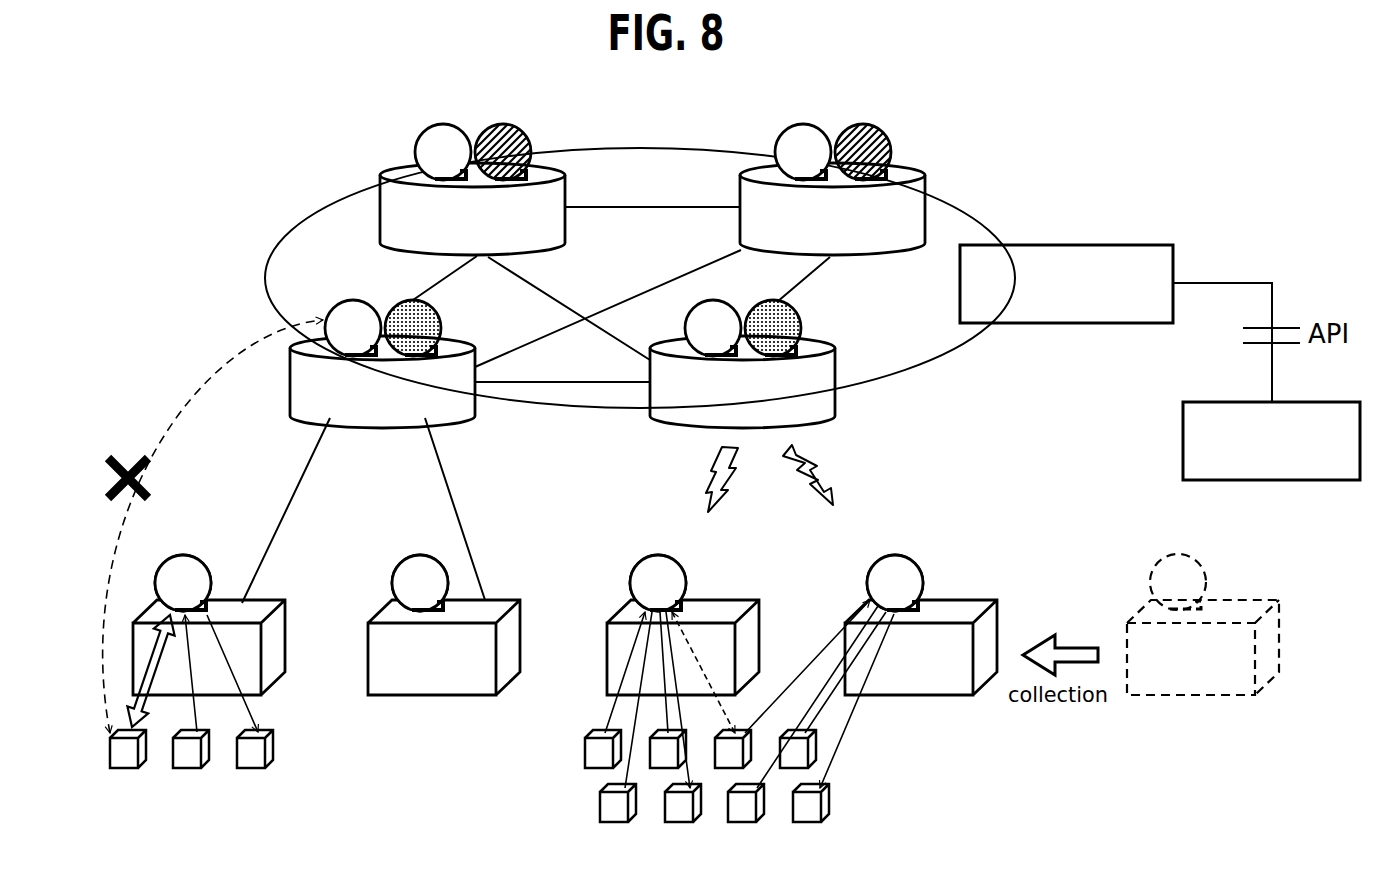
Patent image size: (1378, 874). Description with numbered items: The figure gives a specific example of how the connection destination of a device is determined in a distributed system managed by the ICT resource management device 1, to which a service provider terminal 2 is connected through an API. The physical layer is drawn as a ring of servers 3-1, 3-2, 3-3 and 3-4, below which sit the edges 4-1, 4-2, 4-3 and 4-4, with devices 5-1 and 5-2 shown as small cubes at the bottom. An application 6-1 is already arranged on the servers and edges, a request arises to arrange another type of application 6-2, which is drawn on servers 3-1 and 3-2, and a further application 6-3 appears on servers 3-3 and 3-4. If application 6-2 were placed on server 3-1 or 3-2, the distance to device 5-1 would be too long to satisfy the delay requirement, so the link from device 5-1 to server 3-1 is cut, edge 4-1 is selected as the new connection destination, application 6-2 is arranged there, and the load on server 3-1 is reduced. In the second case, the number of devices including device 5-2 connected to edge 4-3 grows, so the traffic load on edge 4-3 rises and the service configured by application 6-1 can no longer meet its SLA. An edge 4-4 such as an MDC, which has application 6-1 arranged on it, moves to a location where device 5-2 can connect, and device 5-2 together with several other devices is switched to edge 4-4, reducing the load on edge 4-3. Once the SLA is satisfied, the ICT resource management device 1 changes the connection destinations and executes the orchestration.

The ICT resource management device 1 is at (1100, 242).
The service provider terminal 2 is at (1305, 400).
The server 3-1 is at (290, 385).
The server 3-2 is at (838, 378).
The server 3-3 is at (925, 172).
The server 3-4 is at (380, 170).
The edge 4-1 is at (283, 645).
The edge device 4-2 is at (522, 645).
The edge 4-3 is at (760, 645).
The edge 4-4 is at (995, 645).
The device 5-1 is at (110, 752).
The device 5-2 is at (722, 770).
The application 6-1 is at (436, 128).
The application 6-2 is at (441, 320).
The application 6-3 is at (516, 126).